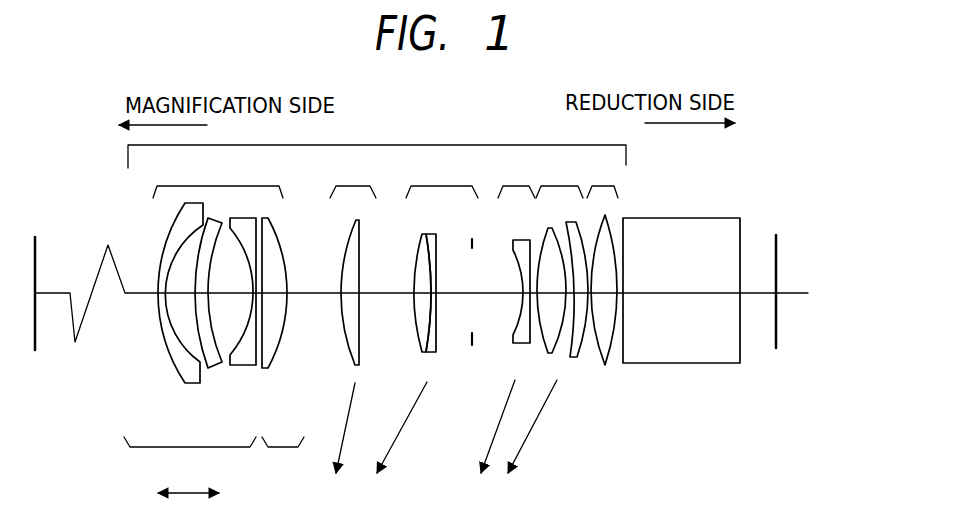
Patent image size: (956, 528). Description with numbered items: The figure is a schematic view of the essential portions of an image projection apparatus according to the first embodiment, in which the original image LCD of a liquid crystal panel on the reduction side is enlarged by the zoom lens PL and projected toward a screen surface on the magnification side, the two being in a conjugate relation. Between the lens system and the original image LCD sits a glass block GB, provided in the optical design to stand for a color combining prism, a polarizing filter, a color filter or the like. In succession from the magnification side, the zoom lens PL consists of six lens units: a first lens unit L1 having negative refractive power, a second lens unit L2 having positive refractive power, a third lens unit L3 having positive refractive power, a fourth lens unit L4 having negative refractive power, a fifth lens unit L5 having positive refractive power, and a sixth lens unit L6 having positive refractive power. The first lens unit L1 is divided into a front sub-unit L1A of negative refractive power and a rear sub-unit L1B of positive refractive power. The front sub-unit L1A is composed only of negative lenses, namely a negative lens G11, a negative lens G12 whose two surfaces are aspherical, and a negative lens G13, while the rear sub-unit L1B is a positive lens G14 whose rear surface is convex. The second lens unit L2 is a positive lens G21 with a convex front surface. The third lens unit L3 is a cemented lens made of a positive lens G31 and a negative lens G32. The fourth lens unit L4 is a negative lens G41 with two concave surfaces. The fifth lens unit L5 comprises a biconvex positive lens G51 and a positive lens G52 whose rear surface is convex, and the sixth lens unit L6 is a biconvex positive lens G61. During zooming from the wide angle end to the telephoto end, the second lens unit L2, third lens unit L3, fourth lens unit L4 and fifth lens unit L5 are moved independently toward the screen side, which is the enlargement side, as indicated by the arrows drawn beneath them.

The zoom lens (projection lens) PL is at (377, 143).
The first lens unit L1 is at (214, 320).
The 1A-th lens unit L1A is at (190, 341).
The 1B-th lens unit L1B is at (283, 349).
The second lens unit L2 is at (344, 280).
The third lens unit L3 is at (425, 297).
The fourth lens unit L4 is at (498, 275).
The fifth lens unit L5 is at (571, 307).
The sixth lens unit L6 is at (624, 292).
The negative lens G11 is at (180, 370).
The negative lens G12 is at (215, 360).
The negative lens G13 is at (240, 362).
The positive lens G14 is at (270, 352).
The positive lens G21 is at (350, 328).
The positive lens G31 is at (424, 347).
The negative lens G32 is at (433, 352).
The negative lens G41 is at (515, 343).
The positive lens G51 is at (545, 352).
The positive lens G52 is at (568, 358).
The positive lens G61 is at (605, 362).
The glass block (prism) GB is at (676, 225).
The original image of a liquid crystal panel LCD is at (778, 243).